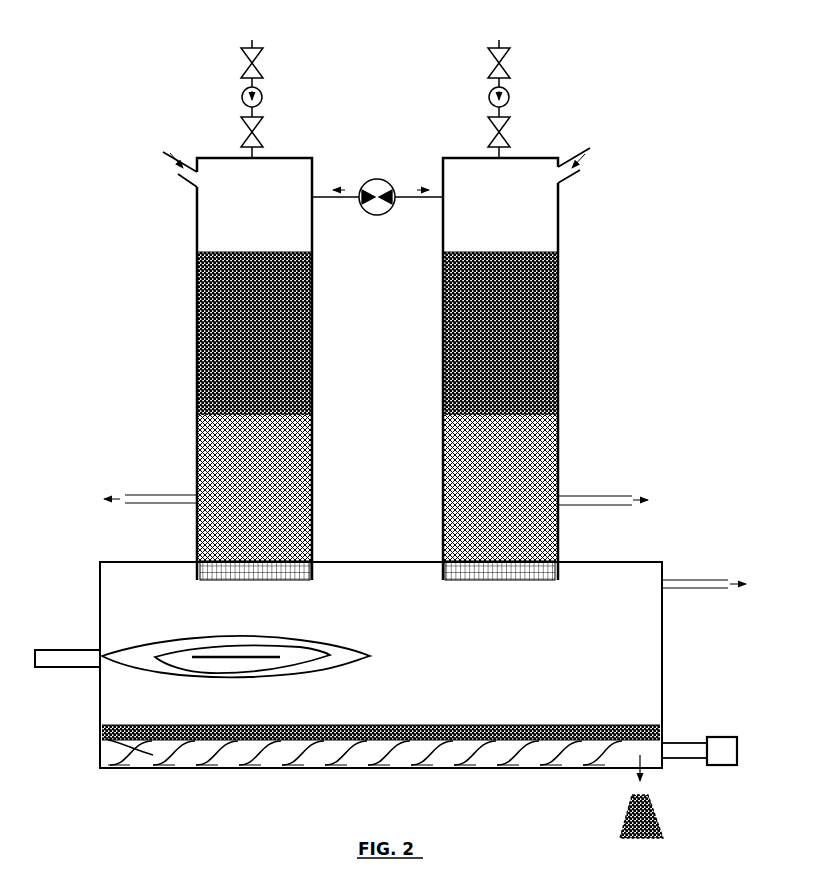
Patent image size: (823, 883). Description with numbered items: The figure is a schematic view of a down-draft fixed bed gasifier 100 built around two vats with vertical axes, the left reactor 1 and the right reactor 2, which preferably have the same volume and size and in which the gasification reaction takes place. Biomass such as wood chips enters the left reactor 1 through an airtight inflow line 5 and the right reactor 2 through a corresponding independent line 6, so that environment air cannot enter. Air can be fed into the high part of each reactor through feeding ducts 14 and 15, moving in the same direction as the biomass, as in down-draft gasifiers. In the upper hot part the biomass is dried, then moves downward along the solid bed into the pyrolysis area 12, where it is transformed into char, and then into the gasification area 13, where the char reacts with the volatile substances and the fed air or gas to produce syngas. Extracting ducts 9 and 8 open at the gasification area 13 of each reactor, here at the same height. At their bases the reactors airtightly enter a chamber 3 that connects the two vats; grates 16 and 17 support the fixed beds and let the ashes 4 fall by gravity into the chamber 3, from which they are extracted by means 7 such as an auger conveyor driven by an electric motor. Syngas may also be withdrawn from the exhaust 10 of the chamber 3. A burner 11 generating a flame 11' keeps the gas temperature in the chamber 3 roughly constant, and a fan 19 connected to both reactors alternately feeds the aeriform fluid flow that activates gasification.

The reactor 1 is at (300, 158).
The reactor 2 is at (457, 158).
The chamber 3 is at (663, 675).
The ashes 4 is at (120, 730).
The inflow line 5 is at (233, 78).
The feeding line 6 is at (522, 85).
The extraction means 7 is at (683, 752).
The extracting duct 8 is at (603, 492).
The extracting duct 9 is at (150, 488).
The exhaust 10 is at (719, 586).
The burner 11 is at (67, 637).
The flame 11' is at (236, 729).
The pyrolysis area 12 is at (420, 252).
The gasification area 13 is at (420, 412).
The feeding duct 14 is at (167, 164).
The feeding duct 15 is at (588, 159).
The grate 16 is at (205, 581).
The grate 17 is at (548, 583).
The fan 19 is at (378, 182).
The gasifier 100 is at (608, 338).